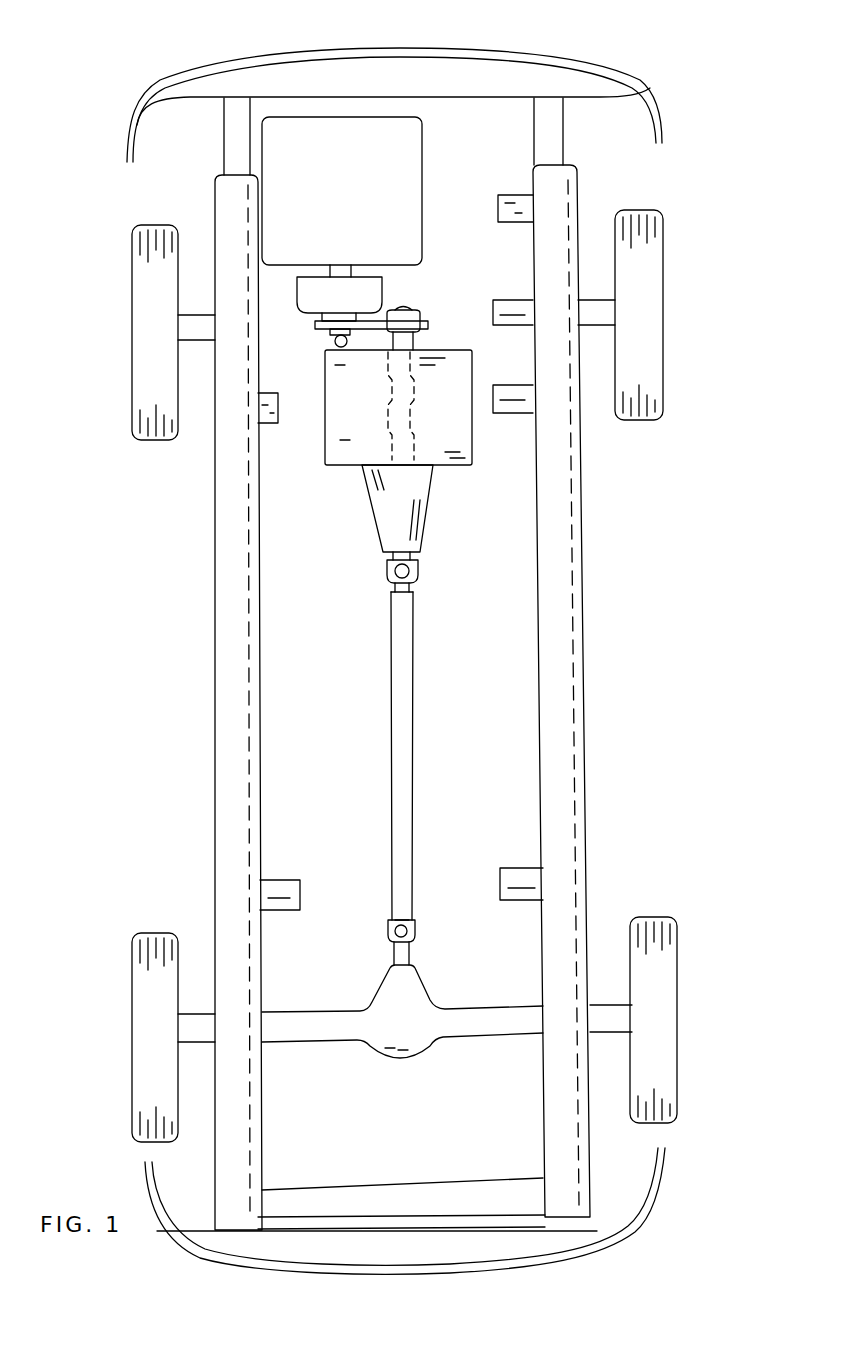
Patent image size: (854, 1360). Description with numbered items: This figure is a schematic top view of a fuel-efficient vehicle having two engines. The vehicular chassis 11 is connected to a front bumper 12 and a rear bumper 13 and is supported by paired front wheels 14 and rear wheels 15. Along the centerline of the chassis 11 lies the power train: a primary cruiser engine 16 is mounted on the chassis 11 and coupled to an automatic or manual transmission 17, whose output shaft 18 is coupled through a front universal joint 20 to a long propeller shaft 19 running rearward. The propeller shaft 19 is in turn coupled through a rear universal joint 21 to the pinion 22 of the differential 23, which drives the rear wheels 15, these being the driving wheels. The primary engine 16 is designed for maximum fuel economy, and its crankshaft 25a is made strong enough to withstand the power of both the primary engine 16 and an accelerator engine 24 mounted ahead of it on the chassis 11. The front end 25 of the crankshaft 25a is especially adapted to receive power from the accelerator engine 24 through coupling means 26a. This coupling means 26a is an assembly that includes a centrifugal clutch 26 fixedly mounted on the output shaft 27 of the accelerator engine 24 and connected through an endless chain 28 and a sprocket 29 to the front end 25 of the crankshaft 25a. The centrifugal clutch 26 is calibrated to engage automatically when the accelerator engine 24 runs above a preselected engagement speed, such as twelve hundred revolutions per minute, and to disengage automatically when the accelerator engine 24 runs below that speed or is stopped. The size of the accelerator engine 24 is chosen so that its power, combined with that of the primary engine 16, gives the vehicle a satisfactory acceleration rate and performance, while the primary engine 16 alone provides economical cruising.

The vehicular chassis 11 is at (583, 668).
The front bumper 12 is at (390, 50).
The rear bumper 13 is at (655, 1208).
The front wheels 14 is at (133, 290).
The rear wheels 15 is at (133, 990).
The primary cruiser engine 16 is at (398, 407).
The transmission 17 is at (397, 508).
The output shaft 18 is at (418, 558).
The propeller shaft 19 is at (413, 750).
The front universal joint 20 is at (418, 572).
The rear universal joint 21 is at (418, 928).
The pinion 22 is at (412, 955).
The differential 23 is at (402, 1011).
The accelerator engine 24 is at (342, 197).
The front end of crankshaft 25 is at (413, 343).
The crankshaft 25a is at (412, 395).
The centrifugal clutch 26 is at (339, 299).
The coupling means 26a is at (412, 280).
The output shaft of accelerator engine 27 is at (352, 267).
The endless chain 28 is at (350, 343).
The sprocket 29 is at (412, 312).